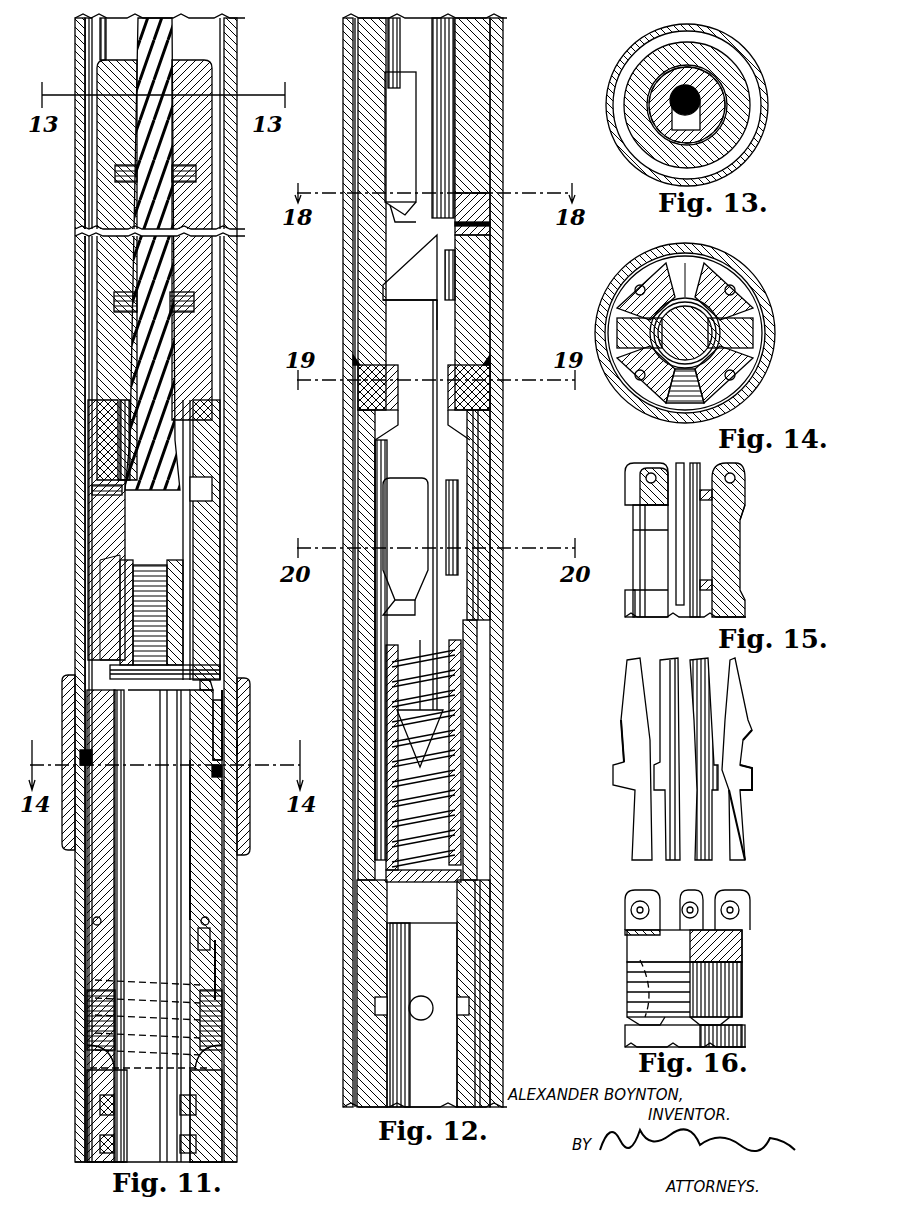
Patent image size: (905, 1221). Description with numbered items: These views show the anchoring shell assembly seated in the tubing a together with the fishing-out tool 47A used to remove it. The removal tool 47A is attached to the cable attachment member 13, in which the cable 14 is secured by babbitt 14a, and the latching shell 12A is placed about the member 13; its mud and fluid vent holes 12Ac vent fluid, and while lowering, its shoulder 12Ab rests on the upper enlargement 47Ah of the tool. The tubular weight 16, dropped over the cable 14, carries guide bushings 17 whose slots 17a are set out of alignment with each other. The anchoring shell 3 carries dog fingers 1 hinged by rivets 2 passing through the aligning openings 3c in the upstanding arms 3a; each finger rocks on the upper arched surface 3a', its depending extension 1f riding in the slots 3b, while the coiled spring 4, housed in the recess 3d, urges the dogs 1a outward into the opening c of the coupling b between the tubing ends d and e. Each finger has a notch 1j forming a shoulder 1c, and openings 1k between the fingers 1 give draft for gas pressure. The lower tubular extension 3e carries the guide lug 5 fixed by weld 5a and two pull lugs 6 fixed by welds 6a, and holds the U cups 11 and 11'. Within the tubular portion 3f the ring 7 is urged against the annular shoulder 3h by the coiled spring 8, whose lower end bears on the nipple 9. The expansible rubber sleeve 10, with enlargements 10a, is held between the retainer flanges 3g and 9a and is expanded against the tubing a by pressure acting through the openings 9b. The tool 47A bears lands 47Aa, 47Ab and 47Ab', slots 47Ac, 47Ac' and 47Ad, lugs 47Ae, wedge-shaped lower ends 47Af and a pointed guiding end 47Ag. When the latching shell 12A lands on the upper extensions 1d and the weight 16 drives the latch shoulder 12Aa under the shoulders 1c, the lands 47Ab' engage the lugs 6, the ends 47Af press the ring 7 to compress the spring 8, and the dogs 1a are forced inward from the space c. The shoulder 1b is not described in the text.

In FIG. 11, the dog fingers 1 is at (210, 860).
In FIG. 14, the dog fingers 1 is at (750, 325).
In FIG. 16, the dog fingers 1 is at (735, 818).
In FIG. 11, the dogs 1a is at (240, 770).
In FIG. 16, the dogs 1a is at (745, 775).
In FIG. 11, the notch of slip 1b is at (85, 757).
In FIG. 16, the notch of slip 1b is at (620, 748).
In FIG. 11, the shoulder 1c is at (240, 718).
In FIG. 16, the shoulder 1c is at (745, 730).
In FIG. 11, the upper extensions 1d is at (210, 672).
In FIG. 16, the upper extensions 1d is at (745, 692).
In FIG. 11, the depending extension 1f is at (210, 965).
In FIG. 16, the depending extension 1f is at (740, 957).
In FIG. 11, the notch 1j is at (215, 725).
In FIG. 16, the notch 1j is at (630, 735).
In FIG. 11, the openings 1k is at (190, 890).
In FIG. 14, the openings 1k is at (745, 300).
In FIG. 16, the openings 1k is at (688, 665).
In FIG. 11, the rivets 2 is at (205, 925).
In FIG. 14, the rivets 2 is at (690, 268).
In FIG. 16, the rivets 2 is at (740, 910).
In FIG. 11, the anchoring shell 3 is at (190, 965).
In FIG. 15, the anchoring shell 3 is at (740, 600).
In FIG. 16, the anchoring shell 3 is at (745, 1040).
In FIG. 11, the upstanding arms 3a is at (151, 925).
In FIG. 14, the upstanding arms 3a is at (657, 349).
In FIG. 15, the upstanding arms 3a is at (690, 551).
In FIG. 16, the upstanding arms 3a is at (707, 900).
In FIG. 15, the upper arched surface 3a' is at (636, 469).
In FIG. 16, the upper arched surface 3a' is at (620, 923).
In FIG. 11, the slots 3b is at (210, 1065).
In FIG. 15, the slots 3b is at (684, 470).
In FIG. 16, the slots 3b is at (745, 1020).
In FIG. 15, the aligning openings 3c is at (725, 475).
In FIG. 15, the recess 3d is at (735, 540).
In FIG. 16, the recess 3d is at (635, 1023).
In FIG. 12, the lower tubular extension 3e is at (475, 130).
In FIG. 12, the lower tubular extension 3f is at (470, 518).
In FIG. 12, the retainer flange 3g is at (490, 918).
In FIG. 12, the annular shoulder 3h is at (465, 418).
In FIG. 11, the coiled spring 4 is at (210, 1012).
In FIG. 16, the coiled spring 4 is at (640, 975).
In FIG. 12, the guide lug 5 is at (480, 213).
In FIG. 12, the weld 5a is at (490, 228).
In FIG. 12, the pull or securing lugs 6 is at (480, 375).
In FIG. 12, the welds 6a is at (355, 352).
In FIG. 12, the ring 7 is at (475, 625).
In FIG. 12, the coiled spring 8 is at (460, 773).
In FIG. 12, the nipple 9 is at (460, 950).
In FIG. 12, the retainer flange 9a is at (365, 1090).
In FIG. 12, the openings 9b is at (425, 1000).
In FIG. 12, the expansible rubber sleeve 10 is at (480, 978).
In FIG. 12, the annular peripheral enlargements 10a is at (490, 1027).
In FIG. 11, the U cup packing 11 is at (190, 1105).
In FIG. 11, the U cup packing 11' is at (192, 1143).
In FIG. 11, the latching shell 12A is at (95, 538).
In FIG. 11, the latch shoulder 12Aa is at (105, 598).
In FIG. 11, the shoulder 12Ab is at (205, 478).
In FIG. 11, the mud and fluid vent holes 12Ac is at (92, 490).
In FIG. 11, the cable attachment member 13 is at (185, 520).
In FIG. 11, the cable 14 is at (185, 432).
In FIG. 13, the cable 14 is at (700, 107).
In FIG. 11, the babbitt 14a is at (130, 455).
In FIG. 11, the tubular weight 16 is at (205, 268).
In FIG. 13, the tubular weight 16 is at (715, 150).
In FIG. 11, the guide bushings 17 is at (128, 148).
In FIG. 13, the guide bushings 17 is at (700, 73).
In FIG. 13, the slots 17a is at (675, 128).
In FIG. 11, the tool 47A is at (130, 885).
In FIG. 12, the tool 47A is at (405, 28).
In FIG. 14, the tool 47A is at (665, 325).
In FIG. 16, the tool 47A is at (704, 759).
In FIG. 12, the land 47Aa is at (425, 118).
In FIG. 12, the land 47Ab is at (353, 185).
In FIG. 12, the lands 47Ab' is at (363, 299).
In FIG. 12, the slot 47Ac is at (421, 218).
In FIG. 12, the slot 47Ac' is at (363, 267).
In FIG. 12, the slots 47Ad is at (450, 278).
In FIG. 12, the lugs 47Ae is at (390, 518).
In FIG. 12, the wedge-shaped lower ends 47Af is at (430, 593).
In FIG. 12, the pointed lower end 47Ag is at (435, 740).
In FIG. 11, the upper enlargement 47Ah is at (120, 672).
In FIG. 11, the tubing a is at (237, 213).
In FIG. 12, the tubing a is at (500, 182).
In FIG. 13, the tubing a is at (710, 33).
In FIG. 11, the coupling b is at (245, 830).
In FIG. 14, the coupling b is at (735, 272).
In FIG. 11, the opening c is at (75, 778).
In FIG. 11, the tubing end d is at (244, 745).
In FIG. 11, the tubing end e is at (243, 790).